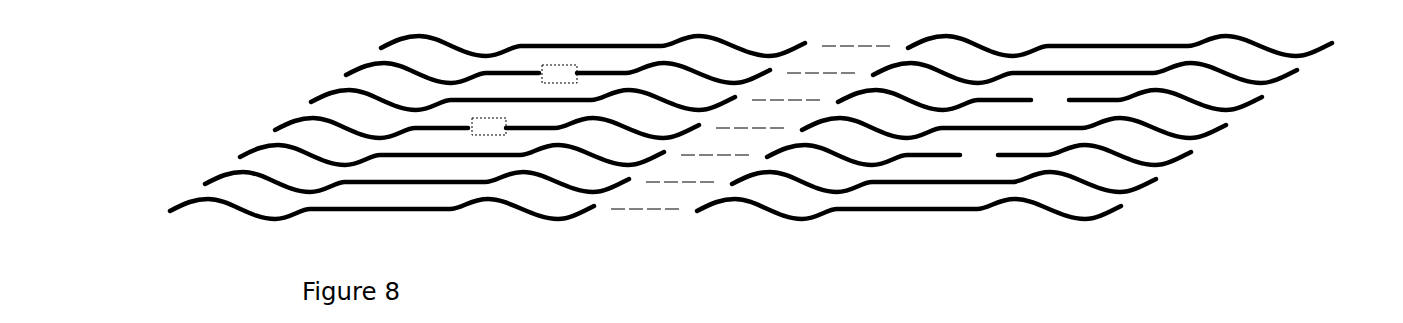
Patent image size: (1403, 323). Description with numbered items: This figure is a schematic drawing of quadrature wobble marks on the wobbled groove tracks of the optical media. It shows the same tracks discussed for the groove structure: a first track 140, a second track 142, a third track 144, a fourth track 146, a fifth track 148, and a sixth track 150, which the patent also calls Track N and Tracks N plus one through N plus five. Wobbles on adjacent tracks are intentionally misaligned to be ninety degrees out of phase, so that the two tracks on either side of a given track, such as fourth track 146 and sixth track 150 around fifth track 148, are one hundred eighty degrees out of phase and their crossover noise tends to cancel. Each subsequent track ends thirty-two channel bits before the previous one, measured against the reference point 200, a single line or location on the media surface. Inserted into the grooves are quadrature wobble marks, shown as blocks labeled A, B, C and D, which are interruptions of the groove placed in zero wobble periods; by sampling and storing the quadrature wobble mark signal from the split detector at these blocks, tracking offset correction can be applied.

The first track (Track N) 140 is at (1270, 78).
The second track (Track N+1) 142 is at (1238, 106).
The third track (Track N+2) 144 is at (1208, 131).
The fourth track (Track N+3) 146 is at (1182, 157).
The fifth track (Track N+4) 148 is at (1128, 186).
The sixth track (Track N+5) 150 is at (1067, 212).
The reference point 200 is at (768, 177).